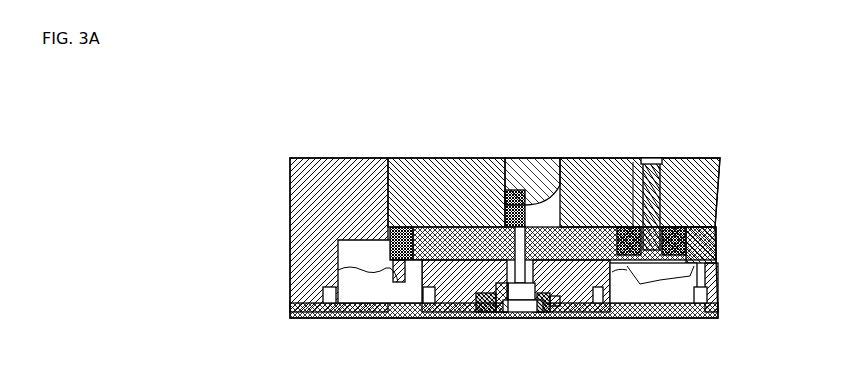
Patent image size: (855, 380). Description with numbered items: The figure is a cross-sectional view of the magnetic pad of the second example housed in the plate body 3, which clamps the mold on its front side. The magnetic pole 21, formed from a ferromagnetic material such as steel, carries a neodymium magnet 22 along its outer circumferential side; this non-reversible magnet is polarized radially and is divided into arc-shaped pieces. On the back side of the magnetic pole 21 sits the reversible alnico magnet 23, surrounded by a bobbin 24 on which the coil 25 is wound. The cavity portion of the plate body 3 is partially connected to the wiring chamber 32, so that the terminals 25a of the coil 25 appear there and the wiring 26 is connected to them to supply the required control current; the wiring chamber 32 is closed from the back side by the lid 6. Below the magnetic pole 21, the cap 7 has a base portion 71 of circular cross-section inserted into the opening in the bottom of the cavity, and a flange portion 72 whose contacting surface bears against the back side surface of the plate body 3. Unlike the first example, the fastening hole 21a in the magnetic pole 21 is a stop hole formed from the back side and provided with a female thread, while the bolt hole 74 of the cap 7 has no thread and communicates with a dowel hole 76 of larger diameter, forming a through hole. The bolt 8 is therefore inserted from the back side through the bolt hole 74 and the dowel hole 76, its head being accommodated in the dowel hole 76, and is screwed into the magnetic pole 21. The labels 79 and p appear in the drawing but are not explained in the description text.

The plate body 3 is at (340, 158).
The magnetic pole 21 is at (410, 162).
The fastening hole 21a is at (494, 160).
The alnico magnet 23 is at (562, 227).
The neodymium magnet 22 is at (635, 185).
The bobbin 24 is at (715, 212).
The coil 25 is at (718, 245).
The terminals 25a is at (720, 280).
The lid 6 is at (722, 307).
The wiring 26 is at (660, 290).
The wiring chamber 32 is at (517, 271).
The base portion 71 is at (457, 305).
The bolt hole 74 is at (486, 312).
The dowel hole 76 is at (500, 313).
The bolt 8 is at (526, 312).
The seal 79 is at (541, 313).
The cap 7 is at (556, 312).
The flange portion 72 is at (556, 312).
The pin axis p is at (516, 190).